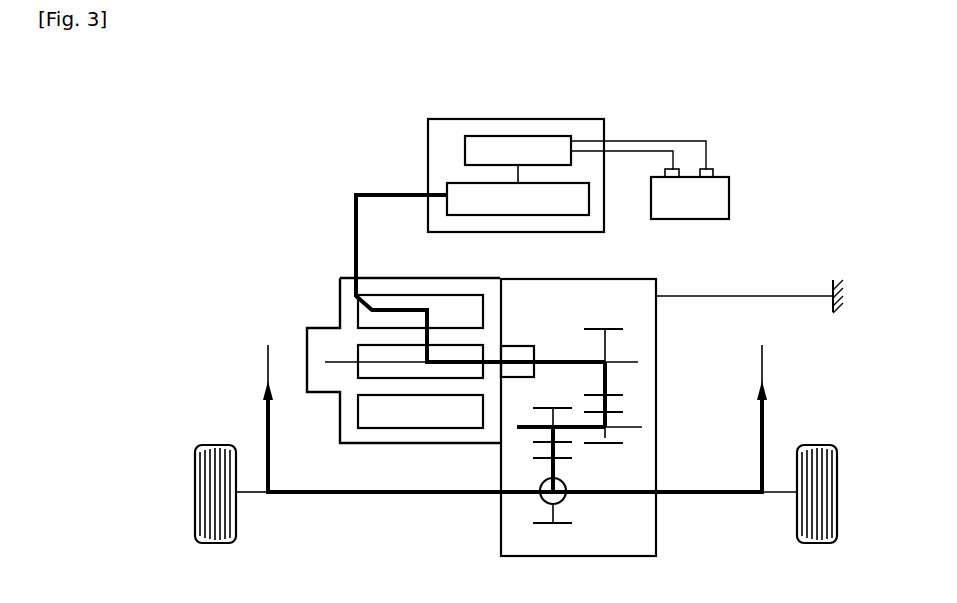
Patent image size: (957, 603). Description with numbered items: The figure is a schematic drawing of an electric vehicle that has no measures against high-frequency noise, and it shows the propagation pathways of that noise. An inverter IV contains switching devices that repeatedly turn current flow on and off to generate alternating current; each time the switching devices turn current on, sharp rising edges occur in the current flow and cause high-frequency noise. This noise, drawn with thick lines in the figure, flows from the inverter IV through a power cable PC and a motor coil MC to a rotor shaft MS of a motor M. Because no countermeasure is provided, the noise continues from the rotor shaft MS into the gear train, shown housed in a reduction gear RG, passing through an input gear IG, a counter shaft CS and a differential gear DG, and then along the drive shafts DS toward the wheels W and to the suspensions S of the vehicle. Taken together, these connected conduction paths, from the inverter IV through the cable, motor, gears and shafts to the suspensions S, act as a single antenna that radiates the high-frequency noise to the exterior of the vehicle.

The inverter IV is at (421, 138).
The power cable PC is at (377, 191).
The motor coil MC is at (406, 296).
The motor M is at (298, 338).
The rotor shaft MS is at (337, 361).
The reduction gear RG is at (634, 272).
The input gear IG is at (624, 362).
The counter shaft CS is at (643, 427).
The differential gear DG is at (553, 517).
The drive shafts DS is at (313, 496).
The suspensions S is at (266, 422).
The wheel W is at (195, 472).